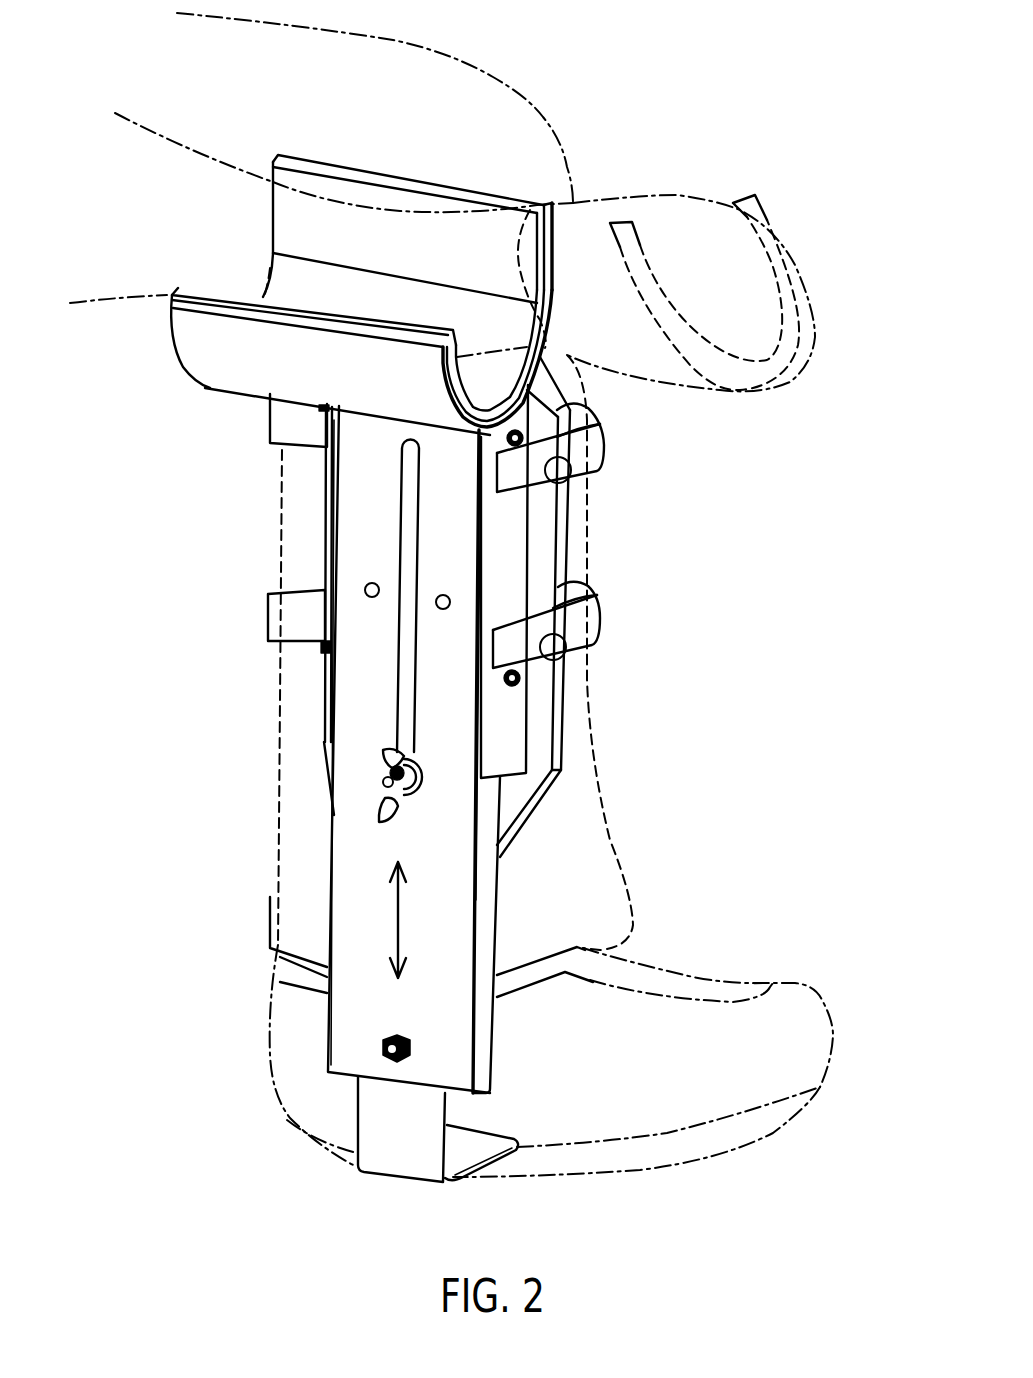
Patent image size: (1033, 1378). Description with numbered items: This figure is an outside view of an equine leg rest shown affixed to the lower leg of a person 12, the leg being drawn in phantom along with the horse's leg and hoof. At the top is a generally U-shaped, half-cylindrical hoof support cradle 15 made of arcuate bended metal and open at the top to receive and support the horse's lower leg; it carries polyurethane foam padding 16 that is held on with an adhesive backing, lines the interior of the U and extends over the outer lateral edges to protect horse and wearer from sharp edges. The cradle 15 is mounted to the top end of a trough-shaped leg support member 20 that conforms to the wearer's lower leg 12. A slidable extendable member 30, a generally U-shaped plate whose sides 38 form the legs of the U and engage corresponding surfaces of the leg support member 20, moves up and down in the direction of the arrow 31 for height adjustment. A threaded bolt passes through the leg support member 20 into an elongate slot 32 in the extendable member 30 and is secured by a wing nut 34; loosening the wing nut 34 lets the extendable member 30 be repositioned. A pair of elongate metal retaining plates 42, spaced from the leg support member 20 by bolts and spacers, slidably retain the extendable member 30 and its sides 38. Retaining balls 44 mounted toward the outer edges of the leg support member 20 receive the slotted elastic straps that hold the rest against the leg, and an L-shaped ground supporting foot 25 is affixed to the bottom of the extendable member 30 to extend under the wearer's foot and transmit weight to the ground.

The lower leg of a person 12 is at (427, 77).
The hoof support cradle 15 is at (190, 355).
The polyurethane foam padding 16 is at (273, 213).
The leg support member 20 is at (513, 792).
The ground supporting bracket or foot 25 is at (398, 1143).
The extendable member 30 is at (362, 1000).
The arrow 31 is at (397, 942).
The elongate slot 32 is at (410, 637).
The wing nut 34 is at (393, 790).
The sides 38 is at (487, 897).
The retaining plates 42 is at (322, 522).
The retaining balls 44 is at (558, 468).